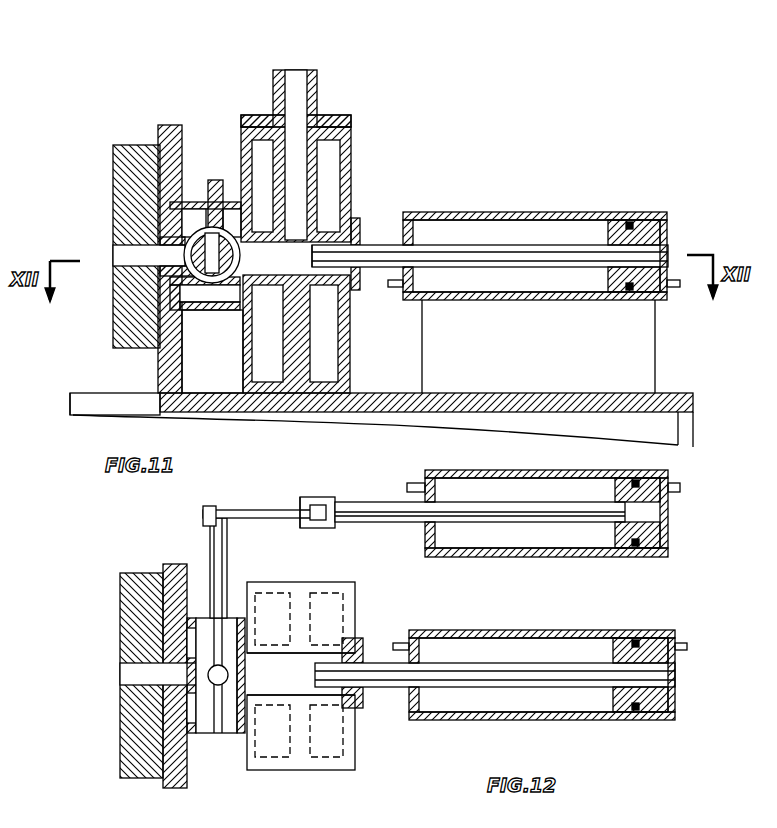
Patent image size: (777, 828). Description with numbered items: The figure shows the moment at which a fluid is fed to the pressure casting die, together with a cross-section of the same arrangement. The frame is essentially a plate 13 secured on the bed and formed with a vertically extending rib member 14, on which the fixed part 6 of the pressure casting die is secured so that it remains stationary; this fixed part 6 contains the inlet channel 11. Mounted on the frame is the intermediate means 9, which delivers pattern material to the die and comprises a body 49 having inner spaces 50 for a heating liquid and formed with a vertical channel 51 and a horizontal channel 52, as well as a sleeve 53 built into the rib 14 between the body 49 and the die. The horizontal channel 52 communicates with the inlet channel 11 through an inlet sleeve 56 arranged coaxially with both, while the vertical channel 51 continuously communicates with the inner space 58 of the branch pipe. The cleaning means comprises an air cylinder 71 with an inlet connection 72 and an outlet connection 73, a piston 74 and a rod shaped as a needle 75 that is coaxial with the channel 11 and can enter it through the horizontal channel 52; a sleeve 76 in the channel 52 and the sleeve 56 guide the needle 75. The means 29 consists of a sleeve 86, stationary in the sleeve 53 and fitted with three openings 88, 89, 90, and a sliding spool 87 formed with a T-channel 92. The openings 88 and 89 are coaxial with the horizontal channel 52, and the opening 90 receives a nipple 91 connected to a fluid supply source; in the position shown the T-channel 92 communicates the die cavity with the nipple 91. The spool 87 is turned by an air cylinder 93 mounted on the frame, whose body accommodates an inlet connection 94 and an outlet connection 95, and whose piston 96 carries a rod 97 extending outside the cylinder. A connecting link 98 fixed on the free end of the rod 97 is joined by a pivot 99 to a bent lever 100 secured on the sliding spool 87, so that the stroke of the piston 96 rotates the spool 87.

In FIG. 11, the part of the pressure casting die 6 is at (113, 318).
In FIG. 12, the part of the pressure casting die 6 is at (120, 590).
In FIG. 11, the intermediate means 9 is at (359, 152).
In FIG. 12, the intermediate means 9 is at (366, 630).
In FIG. 11, the inlet channel 11 is at (113, 262).
In FIG. 12, the inlet channel 11 is at (120, 675).
In FIG. 11, the plate 13 is at (383, 412).
In FIG. 11, the rib member 14 is at (173, 125).
In FIG. 12, the means 29 is at (242, 529).
In FIG. 11, the body 49 is at (350, 358).
In FIG. 11, the inner spaces 50 is at (330, 135).
In FIG. 11, the channel 51 is at (292, 160).
In FIG. 11, the channel 52 is at (322, 282).
In FIG. 11, the sleeve 53 is at (212, 351).
In FIG. 11, the inlet sleeve 56 is at (113, 242).
In FIG. 12, the inlet sleeve 56 is at (160, 692).
In FIG. 11, the inner space 58 is at (292, 82).
In FIG. 11, the air cylinder 71 is at (464, 212).
In FIG. 12, the air cylinder 71 is at (535, 630).
In FIG. 11, the inlet connection 72 is at (672, 290).
In FIG. 12, the inlet connection 72 is at (687, 642).
In FIG. 11, the outlet connection 73 is at (394, 288).
In FIG. 12, the outlet connection 73 is at (403, 643).
In FIG. 11, the piston 74 is at (618, 218).
In FIG. 12, the piston 74 is at (625, 638).
In FIG. 11, the needle 75 is at (383, 240).
In FIG. 12, the needle 75 is at (377, 663).
In FIG. 11, the sleeve 76 is at (360, 220).
In FIG. 12, the sleeve 76 is at (364, 705).
In FIG. 11, the sleeve 86 is at (222, 290).
In FIG. 12, the sleeve 86 is at (247, 722).
In FIG. 11, the sliding spool 87 is at (260, 282).
In FIG. 12, the sliding spool 87 is at (241, 735).
In FIG. 11, the opening 88 is at (203, 290).
In FIG. 12, the opening 88 is at (210, 733).
In FIG. 11, the opening 89 is at (322, 270).
In FIG. 11, the opening 90 is at (207, 202).
In FIG. 11, the nipple 91 is at (221, 180).
In FIG. 11, the T-channel 92 is at (232, 252).
In FIG. 12, the T-channel 92 is at (230, 676).
In FIG. 12, the air cylinder 93 is at (486, 557).
In FIG. 12, the inlet connection 94 is at (680, 488).
In FIG. 12, the outlet connection 95 is at (414, 483).
In FIG. 12, the piston 96 is at (648, 550).
In FIG. 12, the rod 97 is at (388, 522).
In FIG. 12, the connecting link 98 is at (322, 528).
In FIG. 12, the pivot 99 is at (308, 497).
In FIG. 12, the bent lever 100 is at (211, 506).